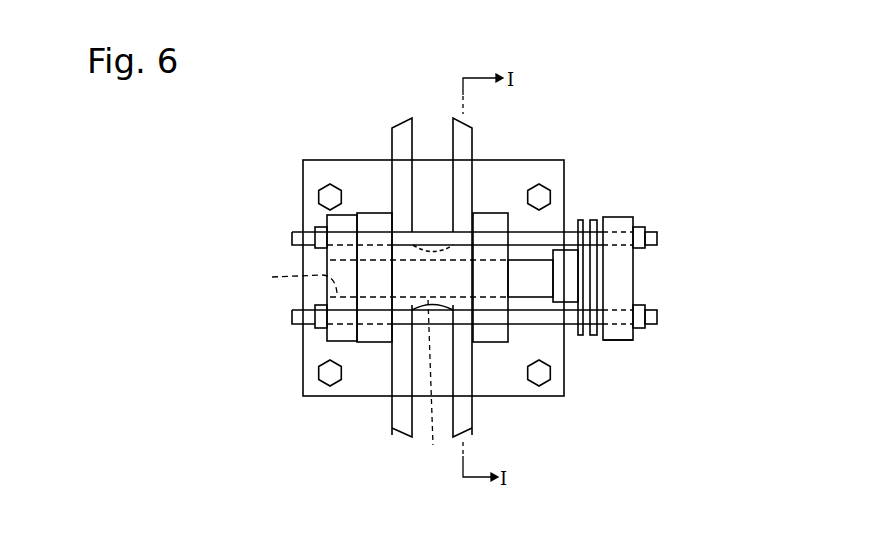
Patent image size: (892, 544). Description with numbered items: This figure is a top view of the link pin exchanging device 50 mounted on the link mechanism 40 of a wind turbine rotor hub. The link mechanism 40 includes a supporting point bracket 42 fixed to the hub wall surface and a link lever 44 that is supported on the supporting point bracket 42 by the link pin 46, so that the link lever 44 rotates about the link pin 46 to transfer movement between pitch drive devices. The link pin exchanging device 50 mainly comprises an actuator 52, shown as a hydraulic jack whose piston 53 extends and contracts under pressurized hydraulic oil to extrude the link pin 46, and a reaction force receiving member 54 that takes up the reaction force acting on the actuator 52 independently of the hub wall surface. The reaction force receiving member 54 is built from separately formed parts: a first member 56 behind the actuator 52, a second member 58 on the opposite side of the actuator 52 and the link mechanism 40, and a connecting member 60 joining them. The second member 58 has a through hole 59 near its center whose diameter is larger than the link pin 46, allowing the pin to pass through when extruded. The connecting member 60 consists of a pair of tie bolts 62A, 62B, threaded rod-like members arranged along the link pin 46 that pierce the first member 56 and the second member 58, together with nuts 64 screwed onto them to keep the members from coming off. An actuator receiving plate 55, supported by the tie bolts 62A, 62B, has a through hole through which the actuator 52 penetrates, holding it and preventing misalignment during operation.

The link mechanism 40 is at (440, 321).
The supporting point bracket 42 is at (367, 342).
The link lever 44 is at (392, 402).
The link pin 46 is at (430, 364).
The link pin exchanging device 50 is at (705, 157).
The actuator 52 is at (548, 240).
The piston 53 is at (532, 297).
The reaction force receiving member 54 is at (620, 204).
The actuator receiving plate 55 is at (582, 218).
The first member 56 is at (622, 340).
The second member 58 is at (337, 341).
The through hole 59 is at (287, 277).
The connecting member 60 is at (399, 263).
The tie bolt 62A is at (291, 238).
The tie bolt 62B is at (292, 318).
The nut 64 is at (313, 227).